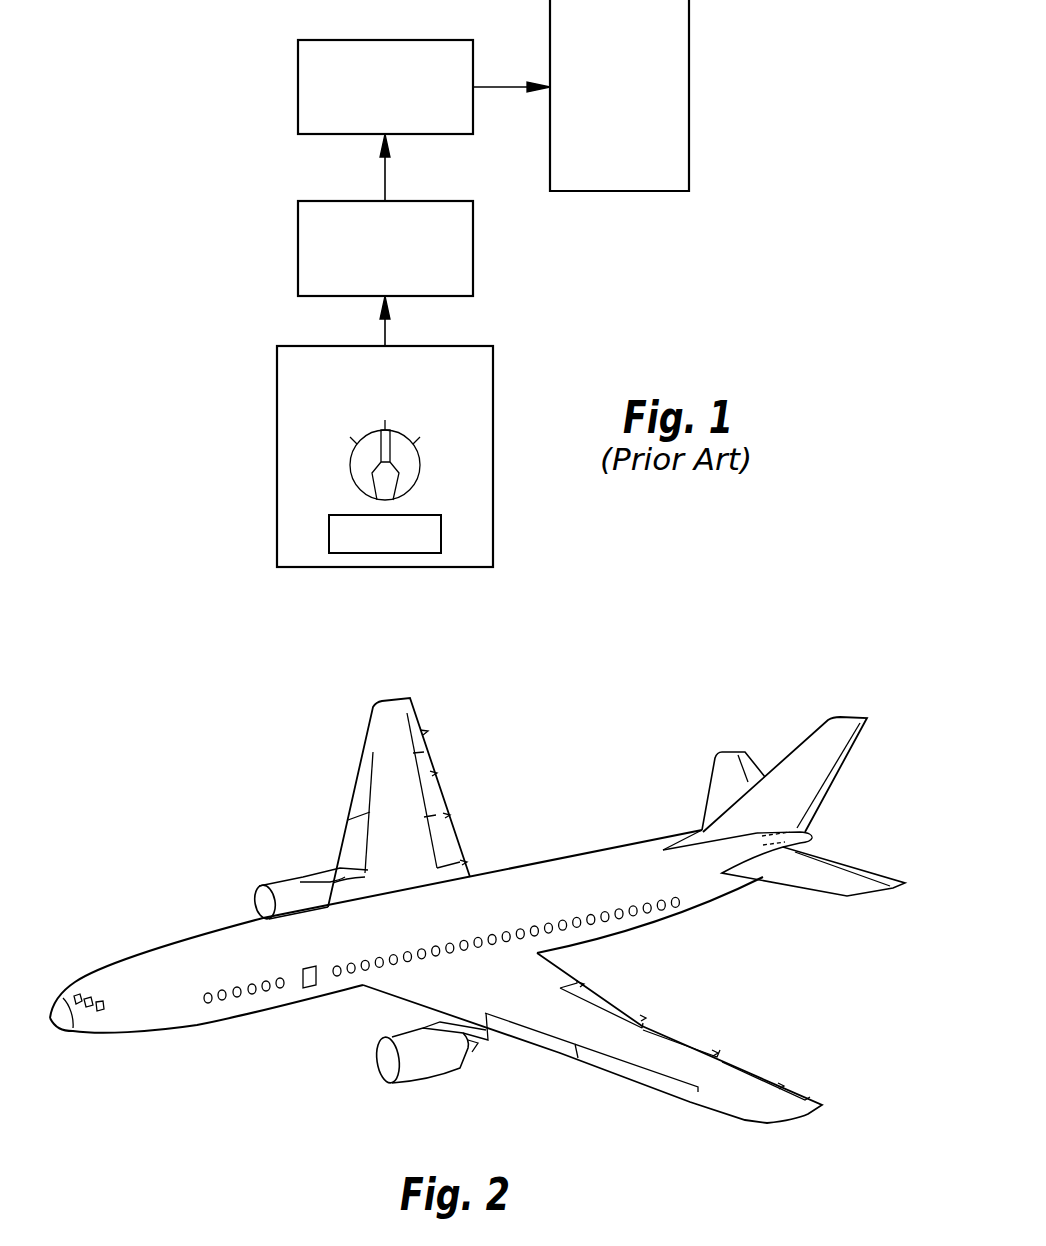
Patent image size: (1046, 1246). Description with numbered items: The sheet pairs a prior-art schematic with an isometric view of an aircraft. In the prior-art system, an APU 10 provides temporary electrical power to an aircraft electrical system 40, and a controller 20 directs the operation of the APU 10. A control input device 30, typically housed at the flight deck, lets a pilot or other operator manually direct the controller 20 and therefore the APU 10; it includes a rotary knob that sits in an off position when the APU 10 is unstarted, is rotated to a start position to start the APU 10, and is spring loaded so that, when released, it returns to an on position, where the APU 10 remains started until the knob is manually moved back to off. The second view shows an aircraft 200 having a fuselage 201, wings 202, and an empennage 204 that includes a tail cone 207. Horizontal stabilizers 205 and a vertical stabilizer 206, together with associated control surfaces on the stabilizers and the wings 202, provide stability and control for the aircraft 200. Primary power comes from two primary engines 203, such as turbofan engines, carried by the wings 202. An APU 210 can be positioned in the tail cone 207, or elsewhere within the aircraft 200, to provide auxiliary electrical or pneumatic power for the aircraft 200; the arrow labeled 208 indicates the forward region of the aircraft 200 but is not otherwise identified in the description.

In FIG. 1, the APU 10 is at (298, 87).
In FIG. 1, the controller 20 is at (298, 249).
In FIG. 1, the control input device 30 is at (277, 458).
In FIG. 1, the aircraft electrical system 40 is at (689, 41).
In FIG. 2, the aircraft 200 is at (211, 651).
In FIG. 2, the fuselage 201 is at (290, 998).
In FIG. 2, the wings 202 is at (365, 729).
In FIG. 2, the primary engines 203 is at (261, 885).
In FIG. 2, the empennage 204 is at (634, 829).
In FIG. 2, the horizontal stabilizers 205 is at (717, 765).
In FIG. 2, the vertical stabilizer 206 is at (810, 748).
In FIG. 2, the tail cone 207 is at (792, 831).
In FIG. 2, the forward fuselage section 208 is at (201, 842).
In FIG. 2, the APU 210 is at (762, 845).